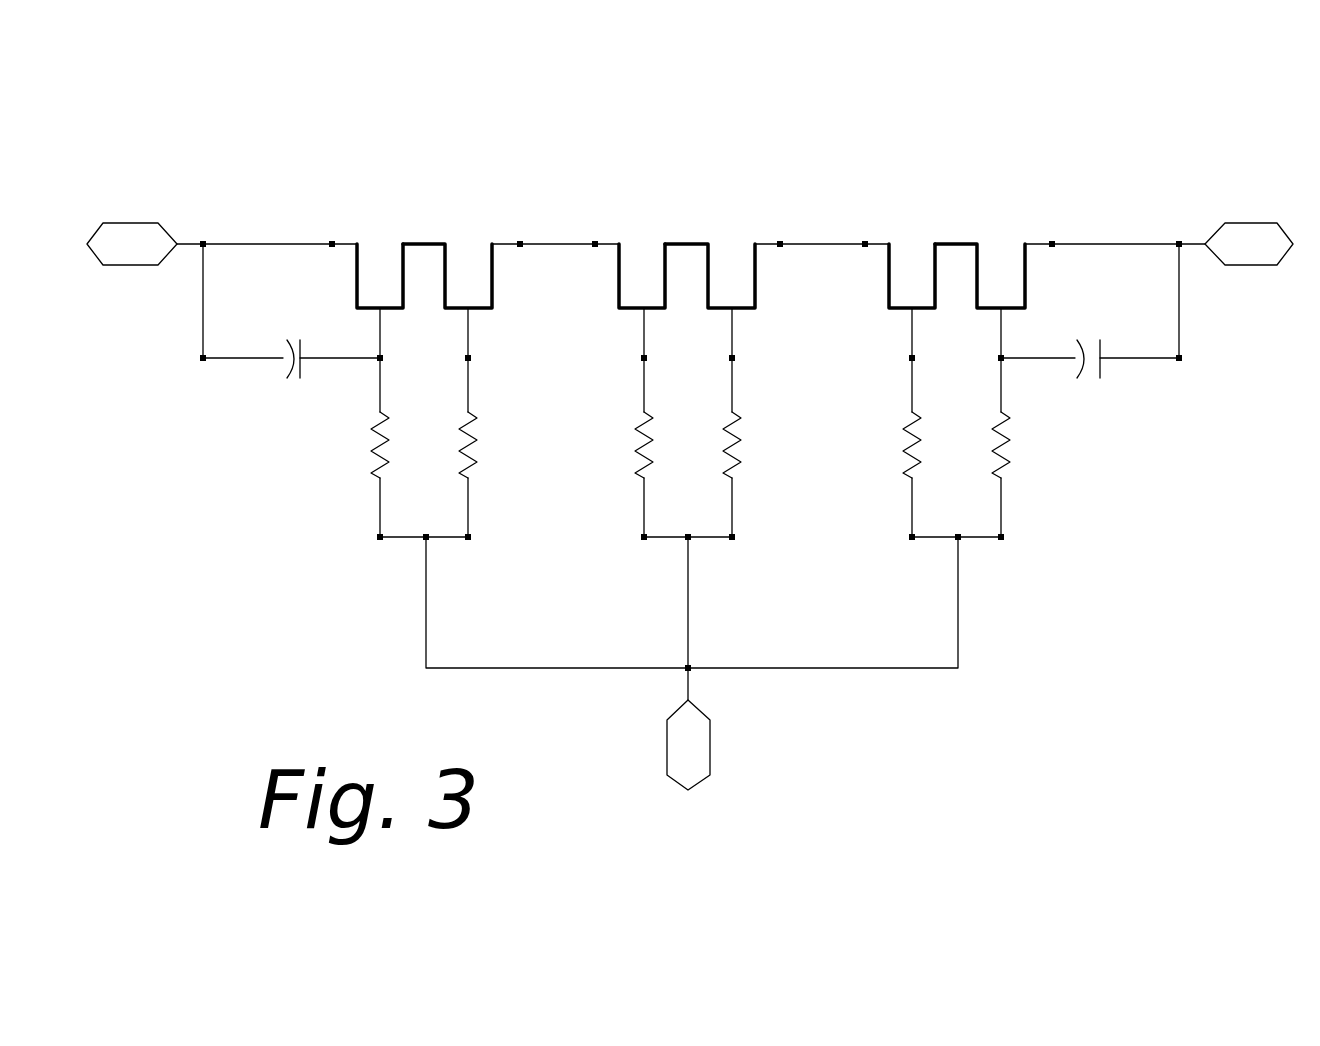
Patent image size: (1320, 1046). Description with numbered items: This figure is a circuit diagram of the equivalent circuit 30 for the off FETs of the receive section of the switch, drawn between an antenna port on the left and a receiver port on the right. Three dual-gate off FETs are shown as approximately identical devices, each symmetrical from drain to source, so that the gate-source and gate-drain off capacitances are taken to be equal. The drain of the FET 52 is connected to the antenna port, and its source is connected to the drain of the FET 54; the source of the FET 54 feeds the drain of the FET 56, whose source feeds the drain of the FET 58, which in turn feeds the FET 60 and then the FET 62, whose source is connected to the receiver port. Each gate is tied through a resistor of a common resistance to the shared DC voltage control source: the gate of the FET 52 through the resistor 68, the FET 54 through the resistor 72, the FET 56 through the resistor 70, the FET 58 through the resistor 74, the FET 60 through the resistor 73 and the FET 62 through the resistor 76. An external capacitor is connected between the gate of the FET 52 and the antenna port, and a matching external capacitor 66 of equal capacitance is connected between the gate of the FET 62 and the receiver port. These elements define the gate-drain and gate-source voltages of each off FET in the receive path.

The RF switch circuit 30 is at (203, 102).
The FET 52 is at (377, 268).
The FET 54 is at (474, 266).
The FET 56 is at (642, 270).
The FET 58 is at (723, 268).
The FET 60 is at (914, 272).
The FET 62 is at (996, 270).
The external capacitor 66 is at (1103, 371).
The resistor 68 is at (283, 370).
The resistor 70 is at (638, 446).
The resistor 72 is at (476, 447).
The resistor 73 is at (905, 436).
The resistor 74 is at (740, 440).
The resistor 76 is at (1010, 448).